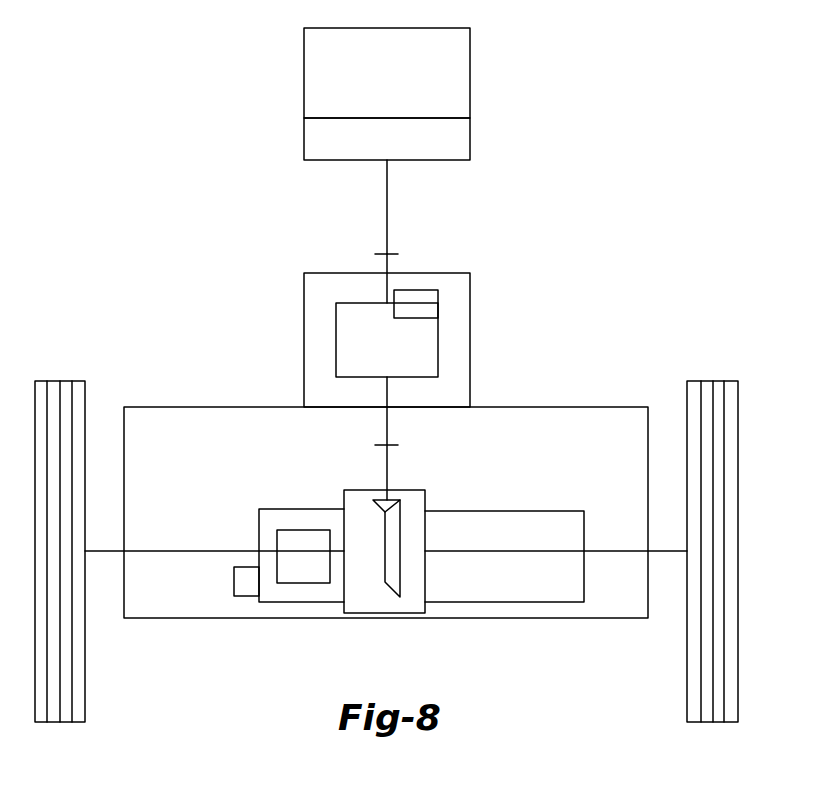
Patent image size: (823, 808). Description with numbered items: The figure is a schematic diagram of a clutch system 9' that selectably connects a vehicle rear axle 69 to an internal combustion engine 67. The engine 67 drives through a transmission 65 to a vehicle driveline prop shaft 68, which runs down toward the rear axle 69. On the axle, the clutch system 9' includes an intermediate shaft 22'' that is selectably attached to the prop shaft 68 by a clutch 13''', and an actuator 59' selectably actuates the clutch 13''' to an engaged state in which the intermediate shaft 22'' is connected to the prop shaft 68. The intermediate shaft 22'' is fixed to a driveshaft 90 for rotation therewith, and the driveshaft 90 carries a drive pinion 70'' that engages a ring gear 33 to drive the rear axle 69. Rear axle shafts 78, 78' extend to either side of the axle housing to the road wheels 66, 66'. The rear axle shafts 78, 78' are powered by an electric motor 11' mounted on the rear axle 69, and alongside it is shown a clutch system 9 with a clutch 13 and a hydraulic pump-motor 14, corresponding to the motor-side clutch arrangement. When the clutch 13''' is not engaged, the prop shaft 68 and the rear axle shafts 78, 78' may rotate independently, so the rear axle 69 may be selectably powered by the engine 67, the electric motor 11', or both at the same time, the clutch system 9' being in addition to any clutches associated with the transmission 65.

The internal combustion engine 67 is at (470, 78).
The transmission 65 is at (470, 135).
The vehicle driveline prop shaft 68 is at (389, 212).
The clutch system 9' is at (412, 330).
The clutch 13''' is at (429, 340).
The actuator 59' is at (416, 304).
The intermediate shaft 22'' is at (420, 392).
The driveshaft 90 is at (389, 468).
The drive pinion 70'' is at (369, 474).
The ring gear 33 is at (400, 572).
The clutch system 9 is at (301, 587).
The clutch 13 is at (303, 556).
The hydraulic pump-motor 14 is at (233, 582).
The electric motor 11' is at (504, 588).
The vehicle rear axle 69 is at (537, 619).
The rear axle shaft 78 is at (214, 581).
The rear axle shaft 78' is at (556, 581).
The road wheel 66 is at (60, 518).
The road wheel 66' is at (712, 518).